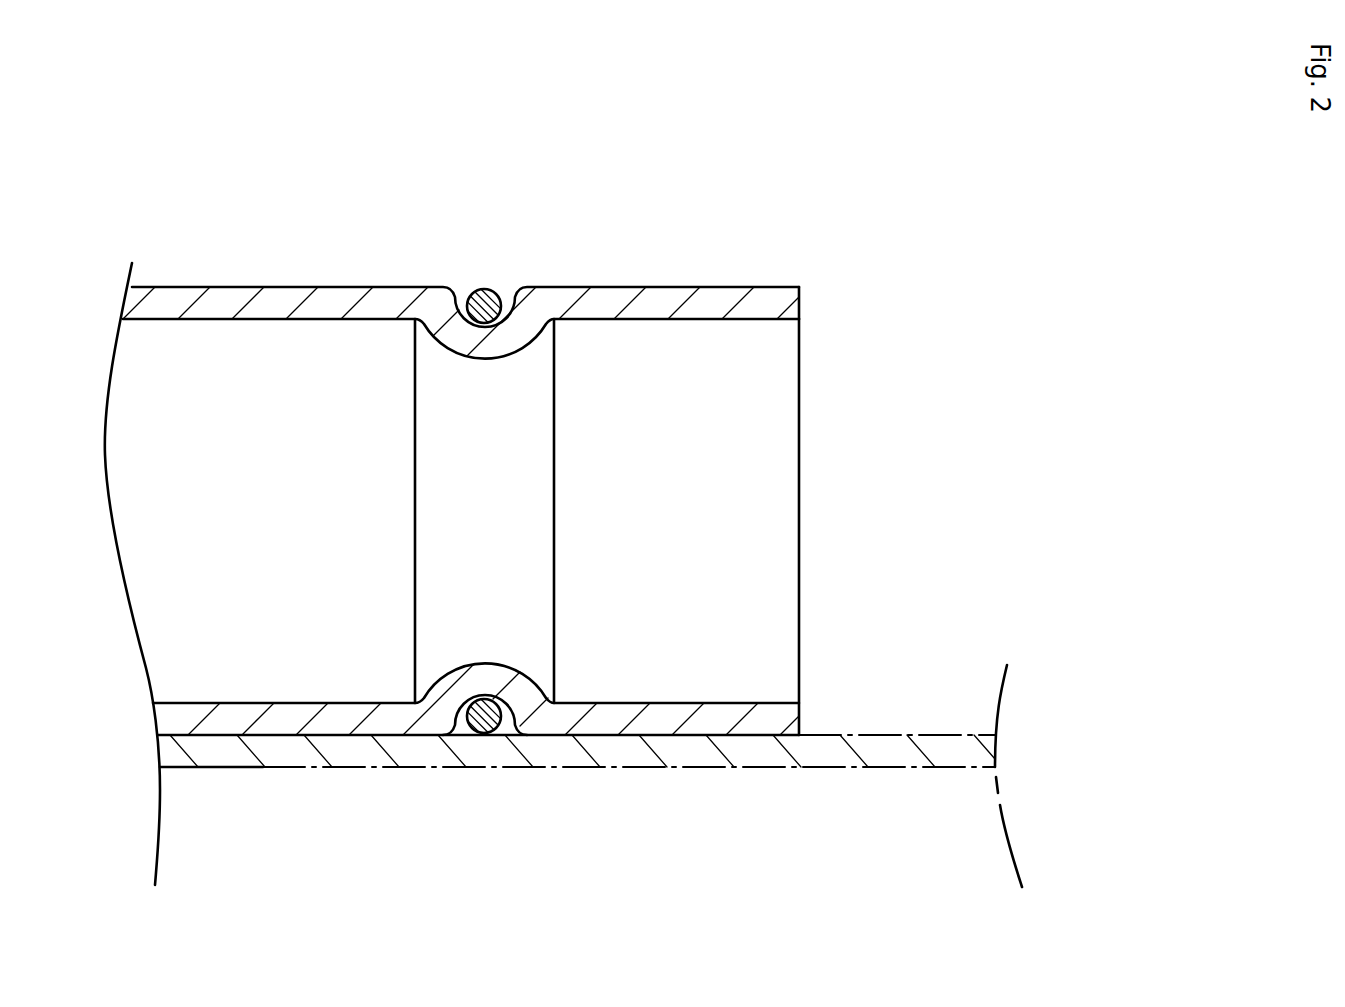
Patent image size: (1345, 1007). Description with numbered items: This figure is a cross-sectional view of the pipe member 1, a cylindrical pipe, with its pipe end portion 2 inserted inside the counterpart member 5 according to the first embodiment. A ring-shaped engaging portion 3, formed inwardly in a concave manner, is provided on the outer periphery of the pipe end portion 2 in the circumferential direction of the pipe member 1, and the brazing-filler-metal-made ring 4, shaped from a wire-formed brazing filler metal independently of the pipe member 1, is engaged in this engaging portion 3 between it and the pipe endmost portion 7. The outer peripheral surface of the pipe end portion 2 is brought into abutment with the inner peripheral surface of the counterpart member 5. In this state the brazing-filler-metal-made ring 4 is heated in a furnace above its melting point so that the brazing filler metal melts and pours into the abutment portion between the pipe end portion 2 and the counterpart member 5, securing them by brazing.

The pipe member 1 is at (234, 287).
The pipe end portion 2 is at (604, 287).
The engaging portion 3 is at (455, 297).
The brazing-filler-metal-made ring 4 is at (480, 730).
The counterpart member 5 is at (760, 770).
The pipe endmost portion 7 is at (802, 303).